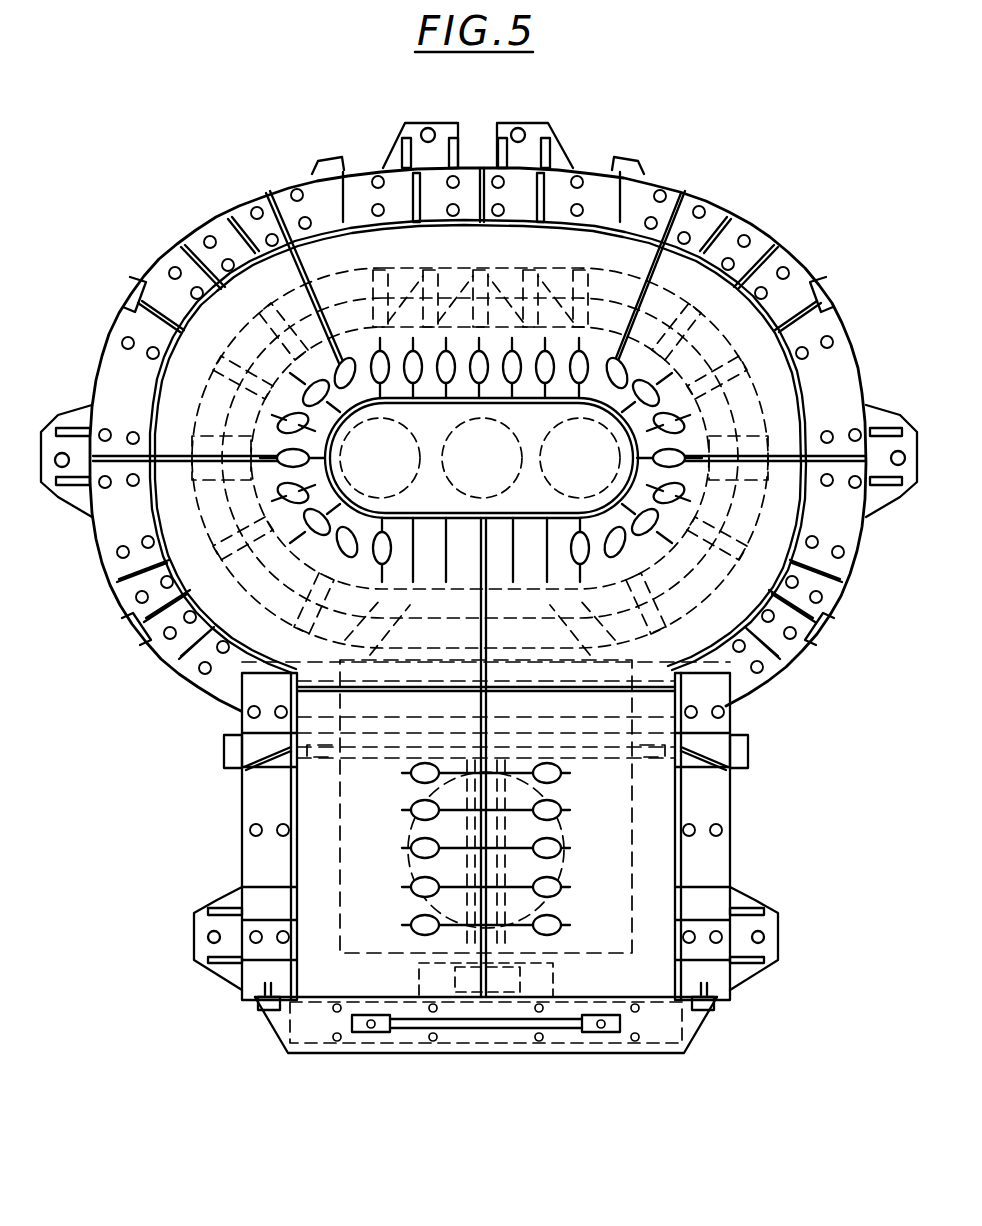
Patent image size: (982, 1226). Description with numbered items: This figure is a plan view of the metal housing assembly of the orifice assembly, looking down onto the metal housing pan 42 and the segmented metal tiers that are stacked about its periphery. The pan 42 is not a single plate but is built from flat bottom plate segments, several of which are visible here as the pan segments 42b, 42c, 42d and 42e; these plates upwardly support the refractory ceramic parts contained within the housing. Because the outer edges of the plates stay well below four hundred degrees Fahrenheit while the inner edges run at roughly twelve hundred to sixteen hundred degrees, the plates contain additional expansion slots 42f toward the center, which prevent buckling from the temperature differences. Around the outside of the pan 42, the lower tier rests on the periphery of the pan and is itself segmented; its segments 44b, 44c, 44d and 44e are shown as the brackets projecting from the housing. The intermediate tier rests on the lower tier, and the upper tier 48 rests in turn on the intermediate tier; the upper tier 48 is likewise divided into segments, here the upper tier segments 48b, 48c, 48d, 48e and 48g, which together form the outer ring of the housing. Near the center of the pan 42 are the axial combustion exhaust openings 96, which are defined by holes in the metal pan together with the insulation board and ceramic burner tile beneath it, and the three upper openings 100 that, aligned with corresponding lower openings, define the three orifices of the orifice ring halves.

The metal housing pan 42 is at (607, 927).
The pan segment 42b is at (352, 840).
The pan segment 42c is at (155, 268).
The pan segment 42d is at (795, 277).
The pan segment 42e is at (607, 243).
The expansion slots 42f is at (552, 803).
The lower tier segment 44b is at (220, 980).
The lower tier segment 44c is at (752, 980).
The lower tier segment 44d is at (85, 508).
The lower tier segment 44e is at (887, 507).
The upper tier 48 is at (812, 327).
The upper tier segment 48b is at (205, 697).
The upper tier segment 48c is at (722, 792).
The upper tier segment 48d is at (125, 588).
The upper tier segment 48e is at (838, 380).
The upper tier segment 48g is at (595, 175).
The axial combustion exhaust openings 96 is at (572, 538).
The upper openings 100 is at (447, 441).